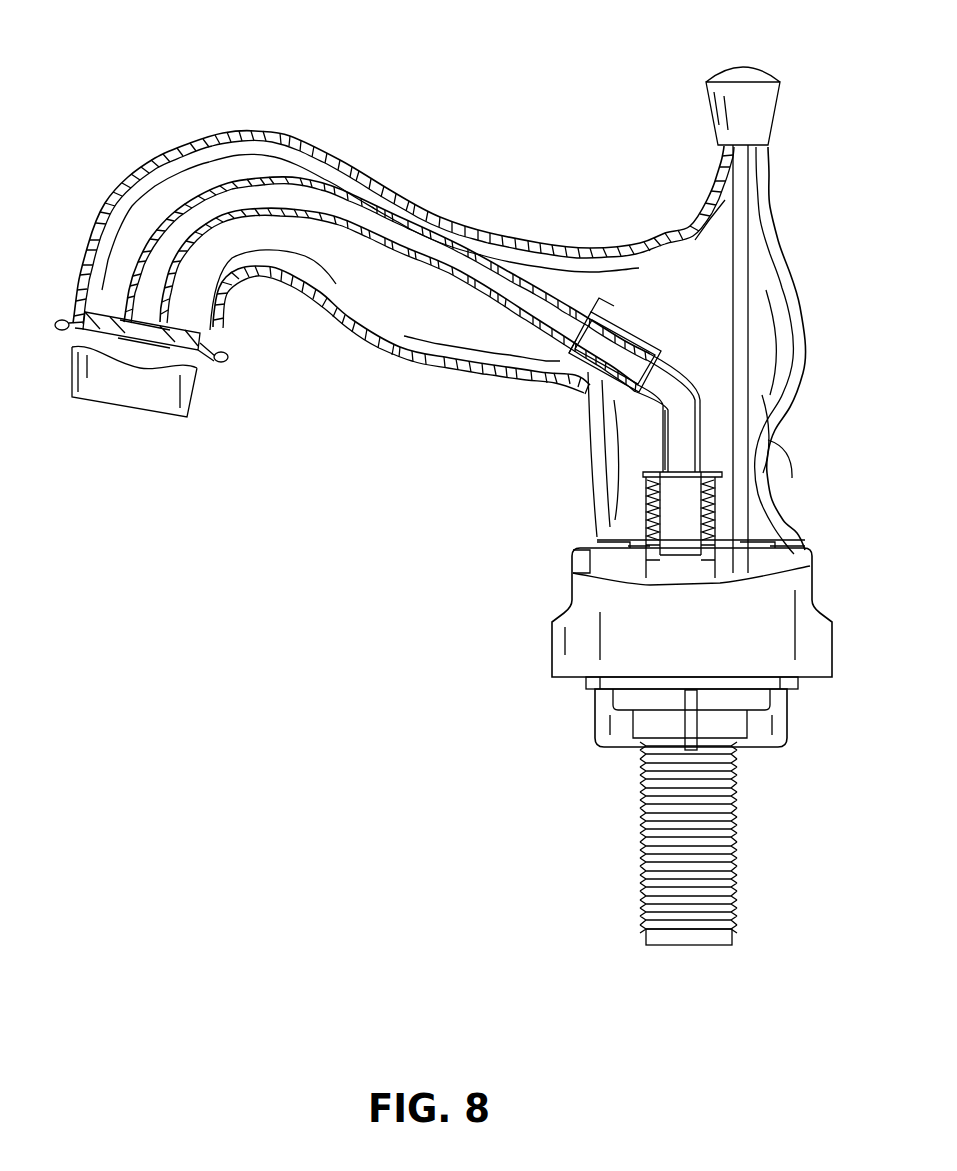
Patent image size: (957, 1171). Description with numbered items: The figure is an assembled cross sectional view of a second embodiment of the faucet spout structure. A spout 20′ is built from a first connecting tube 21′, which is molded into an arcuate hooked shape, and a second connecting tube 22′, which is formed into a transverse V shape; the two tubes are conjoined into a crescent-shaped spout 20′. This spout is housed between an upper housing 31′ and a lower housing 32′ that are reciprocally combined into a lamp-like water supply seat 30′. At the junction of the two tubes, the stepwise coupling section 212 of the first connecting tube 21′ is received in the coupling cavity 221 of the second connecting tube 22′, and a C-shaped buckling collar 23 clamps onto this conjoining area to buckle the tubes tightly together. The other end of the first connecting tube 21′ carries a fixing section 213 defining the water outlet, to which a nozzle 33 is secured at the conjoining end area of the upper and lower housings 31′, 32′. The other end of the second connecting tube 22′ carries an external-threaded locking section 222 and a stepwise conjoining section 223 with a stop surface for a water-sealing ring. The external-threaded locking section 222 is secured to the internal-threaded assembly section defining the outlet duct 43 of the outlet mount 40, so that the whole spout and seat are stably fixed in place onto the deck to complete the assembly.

The spout 20′ is at (178, 190).
The first connecting tube 21′ is at (255, 178).
The second connecting tube 22′ is at (665, 418).
The C-shaped buckling collar 23 is at (610, 315).
The water supply seat 30′ is at (515, 128).
The upper housing 31′ is at (362, 181).
The lower housing 32′ is at (428, 354).
The nozzle 33 is at (80, 370).
The outlet mount 40 is at (818, 448).
The outlet duct 43 is at (730, 528).
The coupling section 212 is at (655, 342).
The fixing section 213 is at (198, 352).
The coupling cavity 221 is at (640, 330).
The external-threaded locking section 222 is at (648, 484).
The conjoining section 223 is at (645, 540).